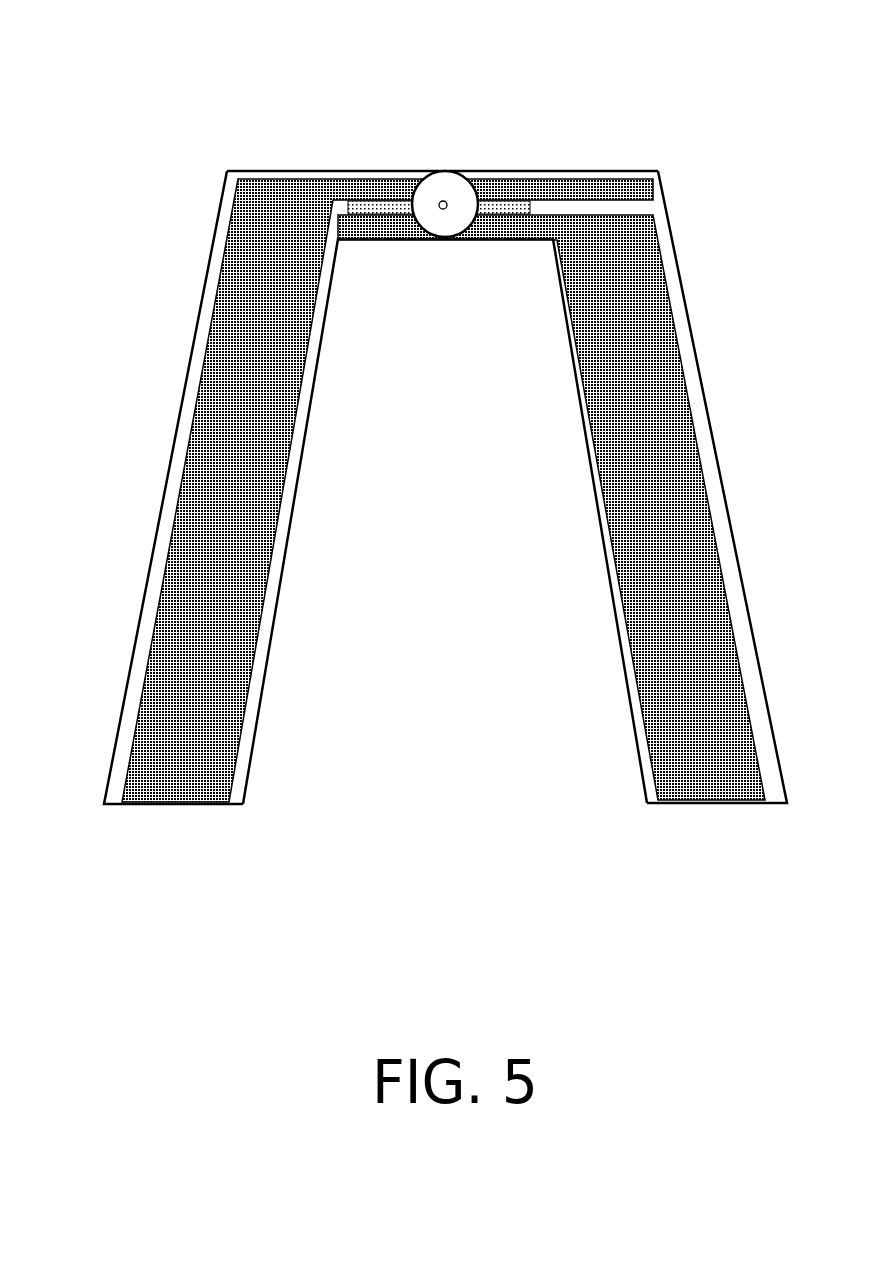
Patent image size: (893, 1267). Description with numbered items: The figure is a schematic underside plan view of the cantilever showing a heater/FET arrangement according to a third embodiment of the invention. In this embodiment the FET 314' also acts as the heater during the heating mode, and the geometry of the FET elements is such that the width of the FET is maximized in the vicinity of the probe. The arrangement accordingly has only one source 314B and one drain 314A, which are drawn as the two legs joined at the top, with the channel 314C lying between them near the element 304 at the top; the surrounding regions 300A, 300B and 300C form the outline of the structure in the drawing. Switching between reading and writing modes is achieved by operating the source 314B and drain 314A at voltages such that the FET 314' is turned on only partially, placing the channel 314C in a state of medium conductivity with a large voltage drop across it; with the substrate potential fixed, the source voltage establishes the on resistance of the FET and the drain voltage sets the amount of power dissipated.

The first leg portion of substrate 300A is at (158, 522).
The second leg portion of substrate 300B is at (705, 385).
The top bar portion of substrate 300C is at (548, 168).
The thermal element / via 304 is at (430, 218).
The FET 314' is at (487, 405).
The channel 314C is at (380, 203).
The source 314B is at (195, 785).
The drain 314A is at (693, 773).